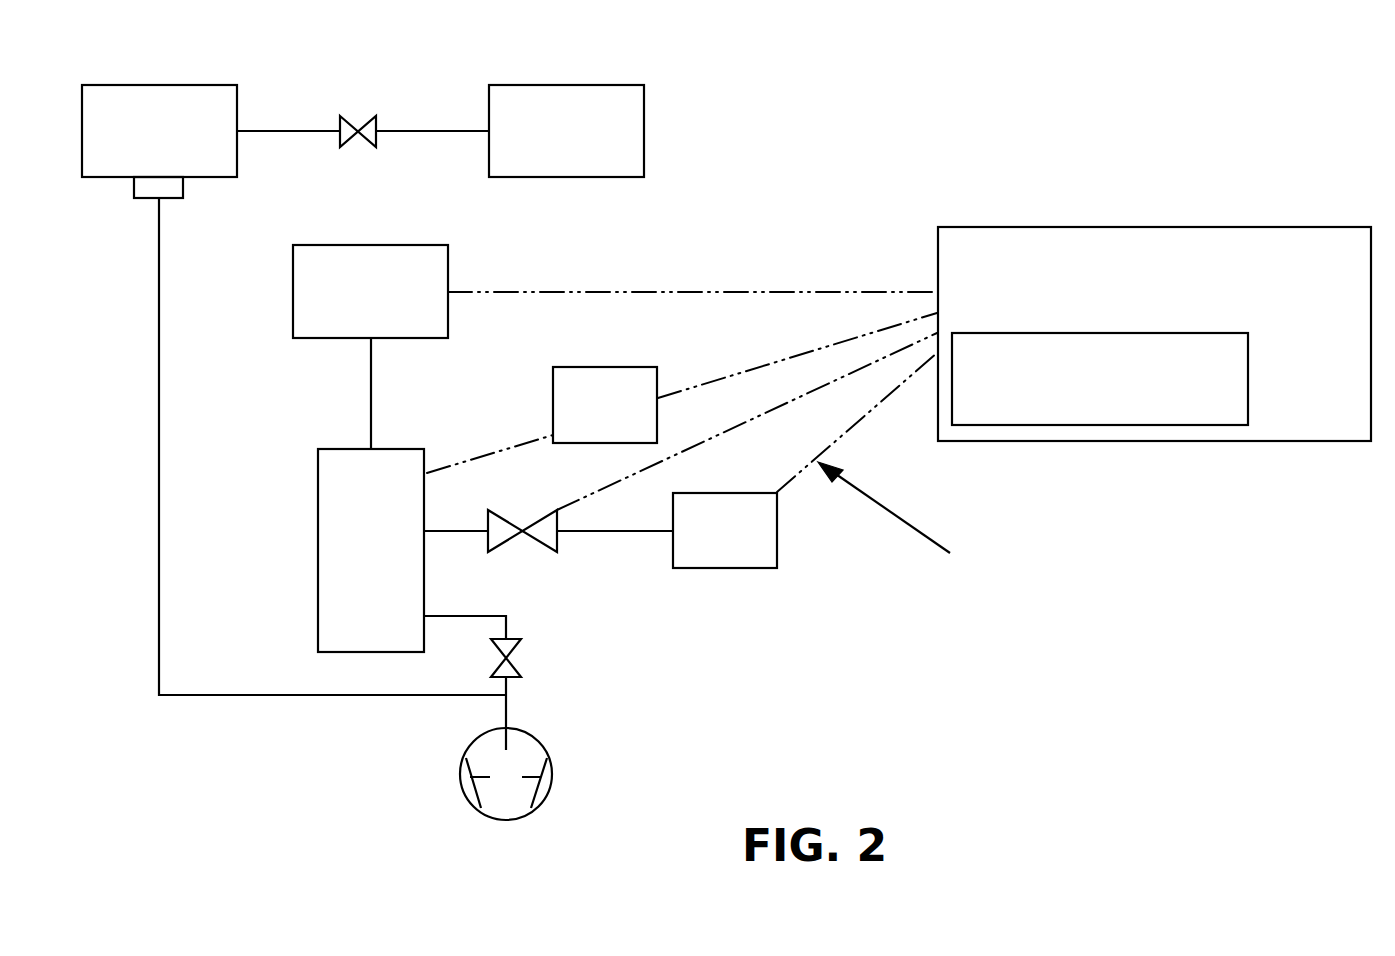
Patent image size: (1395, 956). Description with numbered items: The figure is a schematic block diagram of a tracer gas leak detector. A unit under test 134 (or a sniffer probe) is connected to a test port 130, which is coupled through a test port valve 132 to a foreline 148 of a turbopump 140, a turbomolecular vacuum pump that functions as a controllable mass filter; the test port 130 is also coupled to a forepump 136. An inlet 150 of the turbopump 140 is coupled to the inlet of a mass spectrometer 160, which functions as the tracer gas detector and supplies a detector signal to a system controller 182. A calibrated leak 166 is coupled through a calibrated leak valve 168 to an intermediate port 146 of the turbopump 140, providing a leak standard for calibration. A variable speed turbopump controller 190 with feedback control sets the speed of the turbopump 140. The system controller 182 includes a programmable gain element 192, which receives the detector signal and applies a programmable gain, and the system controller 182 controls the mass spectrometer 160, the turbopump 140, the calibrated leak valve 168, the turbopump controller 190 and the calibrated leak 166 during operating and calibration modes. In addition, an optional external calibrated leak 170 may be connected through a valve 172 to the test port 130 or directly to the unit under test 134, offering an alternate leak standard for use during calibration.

The unit under test 134 is at (160, 85).
The test port 130 is at (170, 199).
The valve 172 is at (364, 121).
The external calibrated leak 170 is at (557, 85).
The mass spectrometer 160 is at (293, 281).
The inlet 150 is at (371, 410).
The turbopump 140 is at (318, 483).
The intermediate port 146 is at (437, 531).
The calibrated leak valve 168 is at (507, 518).
The calibrated leak 166 is at (705, 493).
The foreline 148 is at (445, 616).
The test port valve 132 is at (519, 646).
The forepump 136 is at (472, 743).
The turbopump controller 190 is at (620, 367).
The system controller 182 is at (1105, 227).
The programmable gain element 192 is at (1070, 425).